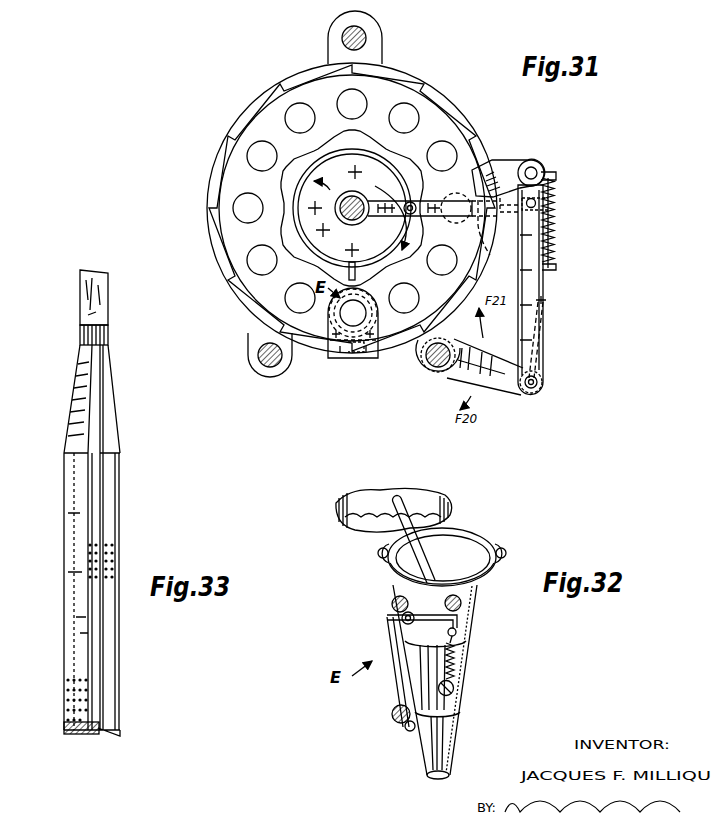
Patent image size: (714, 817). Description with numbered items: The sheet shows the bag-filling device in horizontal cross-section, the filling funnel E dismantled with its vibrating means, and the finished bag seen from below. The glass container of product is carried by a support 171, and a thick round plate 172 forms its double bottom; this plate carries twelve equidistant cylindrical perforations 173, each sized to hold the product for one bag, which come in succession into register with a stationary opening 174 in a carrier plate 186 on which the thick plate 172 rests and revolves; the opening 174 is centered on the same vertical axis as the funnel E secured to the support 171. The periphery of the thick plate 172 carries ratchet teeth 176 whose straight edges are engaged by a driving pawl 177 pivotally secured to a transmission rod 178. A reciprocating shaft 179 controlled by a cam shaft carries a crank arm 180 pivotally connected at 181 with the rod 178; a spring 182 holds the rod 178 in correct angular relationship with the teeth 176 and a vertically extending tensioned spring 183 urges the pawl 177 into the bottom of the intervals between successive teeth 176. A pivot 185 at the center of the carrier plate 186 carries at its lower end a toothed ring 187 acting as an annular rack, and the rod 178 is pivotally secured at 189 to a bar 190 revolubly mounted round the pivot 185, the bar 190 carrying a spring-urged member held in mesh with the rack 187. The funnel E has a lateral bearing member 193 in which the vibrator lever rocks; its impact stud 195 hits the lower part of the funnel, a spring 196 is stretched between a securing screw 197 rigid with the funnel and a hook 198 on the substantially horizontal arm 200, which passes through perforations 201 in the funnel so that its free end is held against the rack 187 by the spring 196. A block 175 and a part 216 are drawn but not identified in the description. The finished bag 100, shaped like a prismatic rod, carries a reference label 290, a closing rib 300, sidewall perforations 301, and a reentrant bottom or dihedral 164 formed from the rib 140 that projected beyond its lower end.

In FIG. 31, the support 171 is at (346, 32).
In FIG. 31, the thick round plate 172 is at (462, 148).
In FIG. 31, the cylindrical perforations 173 is at (400, 112).
In FIG. 31, the stationary opening 174 is at (334, 318).
In FIG. 31, the block 175 is at (360, 360).
In FIG. 31, the ratchet teeth 176 is at (301, 80).
In FIG. 31, the driving pawl 177 is at (509, 166).
In FIG. 31, the transmission rod 178 is at (533, 293).
In FIG. 31, the shaft 179 is at (438, 368).
In FIG. 31, the crank arm 180 is at (505, 390).
In FIG. 31, the pivotal connection 181 is at (541, 385).
In FIG. 31, the spring 182 is at (548, 351).
In FIG. 31, the tensioned spring 183 is at (556, 202).
In FIG. 31, the pivot 185 is at (360, 200).
In FIG. 31, the carrier plate 186 is at (312, 355).
In FIG. 31, the pivotal securing point 189 is at (555, 240).
In FIG. 31, the bar 190 is at (488, 243).
In FIG. 32, the toothed ring 187 is at (448, 515).
In FIG. 32, the lateral bearing member 193 is at (397, 604).
In FIG. 32, the impact stud 195 is at (392, 714).
In FIG. 32, the spring 196 is at (456, 662).
In FIG. 32, the securing screw 197 is at (454, 690).
In FIG. 32, the hook 198 is at (458, 633).
In FIG. 32, the horizontal arm 200 is at (438, 562).
In FIG. 32, the perforations 201 is at (390, 552).
In FIG. 33, the bag 100 is at (66, 536).
In FIG. 33, the rib 140 is at (100, 736).
In FIG. 33, the reentrant bottom 164 is at (64, 726).
In FIG. 33, the slot 216 is at (72, 420).
In FIG. 33, the reference label 290 is at (105, 293).
In FIG. 33, the closing rib 300 is at (108, 524).
In FIG. 33, the perforations 301 is at (68, 666).